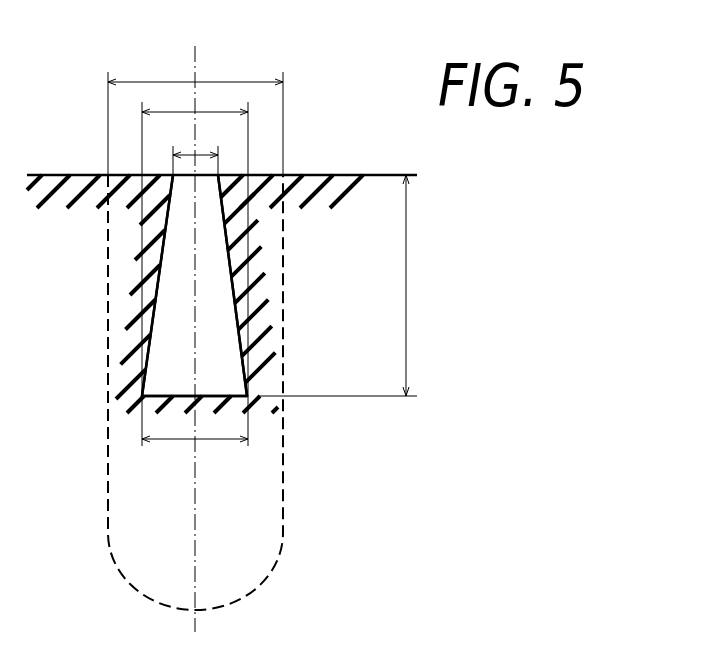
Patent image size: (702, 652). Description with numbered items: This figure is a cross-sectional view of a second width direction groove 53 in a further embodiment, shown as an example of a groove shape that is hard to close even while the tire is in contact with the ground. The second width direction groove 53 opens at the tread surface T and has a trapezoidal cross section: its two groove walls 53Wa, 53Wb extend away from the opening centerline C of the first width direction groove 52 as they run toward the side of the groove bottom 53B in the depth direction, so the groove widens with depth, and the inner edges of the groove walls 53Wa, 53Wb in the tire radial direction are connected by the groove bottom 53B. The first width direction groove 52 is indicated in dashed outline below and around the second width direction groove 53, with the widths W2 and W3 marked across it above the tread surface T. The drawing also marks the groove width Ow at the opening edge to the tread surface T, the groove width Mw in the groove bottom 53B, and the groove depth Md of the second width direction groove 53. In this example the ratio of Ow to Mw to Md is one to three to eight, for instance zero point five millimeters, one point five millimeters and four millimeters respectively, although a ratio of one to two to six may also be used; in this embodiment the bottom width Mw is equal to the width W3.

The first width direction groove 52 is at (209, 519).
The second width direction groove 53 is at (209, 288).
The groove wall 53Wa is at (144, 311).
The groove wall 53Wb is at (239, 310).
The groove bottom 53B is at (212, 396).
The tread surface T is at (68, 175).
The opening centerline C is at (196, 327).
The width W2 is at (195, 115).
The width W3 is at (195, 266).
The groove width at opening edge Ow is at (192, 148).
The groove depth Md is at (348, 285).
The groove width in groove bottom Mw is at (195, 452).